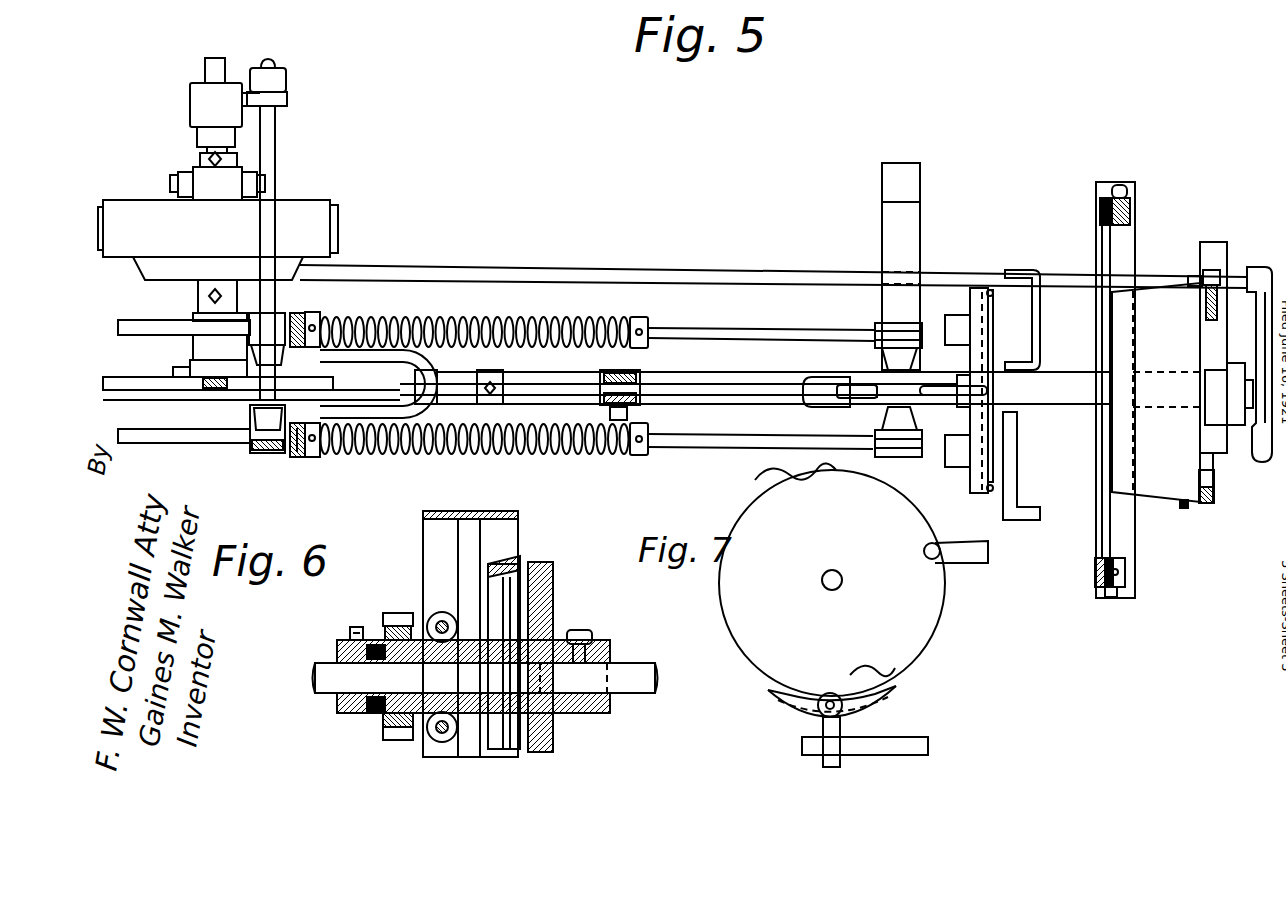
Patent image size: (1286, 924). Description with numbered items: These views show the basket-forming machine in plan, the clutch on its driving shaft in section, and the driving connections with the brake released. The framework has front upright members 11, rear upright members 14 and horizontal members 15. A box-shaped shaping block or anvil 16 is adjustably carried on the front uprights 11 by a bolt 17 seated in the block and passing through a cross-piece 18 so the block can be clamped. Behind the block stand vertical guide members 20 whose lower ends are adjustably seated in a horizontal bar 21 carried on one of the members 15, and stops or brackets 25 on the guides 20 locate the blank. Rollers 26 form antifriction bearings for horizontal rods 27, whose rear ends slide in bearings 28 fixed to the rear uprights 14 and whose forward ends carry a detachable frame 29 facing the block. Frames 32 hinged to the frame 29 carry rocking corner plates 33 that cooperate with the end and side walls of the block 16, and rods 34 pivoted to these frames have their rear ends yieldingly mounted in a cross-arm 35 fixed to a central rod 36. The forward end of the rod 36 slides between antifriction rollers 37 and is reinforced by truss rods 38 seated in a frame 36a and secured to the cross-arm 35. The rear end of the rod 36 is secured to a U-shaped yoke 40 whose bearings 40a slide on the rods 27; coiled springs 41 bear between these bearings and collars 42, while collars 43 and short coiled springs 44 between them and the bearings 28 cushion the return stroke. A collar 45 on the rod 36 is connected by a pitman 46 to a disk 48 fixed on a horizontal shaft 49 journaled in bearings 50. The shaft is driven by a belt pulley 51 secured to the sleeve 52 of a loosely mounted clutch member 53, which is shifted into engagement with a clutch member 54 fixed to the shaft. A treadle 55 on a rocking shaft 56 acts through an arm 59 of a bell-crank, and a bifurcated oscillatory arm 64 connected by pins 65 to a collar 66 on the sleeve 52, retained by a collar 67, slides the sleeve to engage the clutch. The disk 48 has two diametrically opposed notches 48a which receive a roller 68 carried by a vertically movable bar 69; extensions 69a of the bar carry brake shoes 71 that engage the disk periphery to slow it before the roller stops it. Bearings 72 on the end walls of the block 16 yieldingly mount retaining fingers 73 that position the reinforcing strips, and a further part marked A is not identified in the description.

In FIG. 5, the front upright members 11 is at (1216, 358).
In FIG. 5, the rear upright members 14 is at (288, 93).
In FIG. 5, the horizontally disposed members 15 is at (1075, 398).
In FIG. 7, the horizontally disposed members 15 is at (920, 737).
In FIG. 5, the shaping block or anvil 16 is at (1156, 392).
In FIG. 5, the bolt 17 is at (1213, 378).
In FIG. 5, the cross-piece 18 is at (1215, 408).
In FIG. 5, the guide members 20 is at (1100, 205).
In FIG. 5, the horizontal bar 21 is at (1135, 548).
In FIG. 5, the stops or brackets 25 is at (1130, 212).
In FIG. 5, the rollers 26 is at (880, 325).
In FIG. 5, the rods 27 is at (125, 322).
In FIG. 5, the bearings 28 is at (280, 315).
In FIG. 5, the detachable frame 29 is at (968, 358).
In FIG. 5, the frames 32 is at (990, 345).
In FIG. 5, the rocking corner plates 33 is at (1010, 270).
In FIG. 5, the rods 34 is at (945, 397).
In FIG. 5, the cross-arm 35 is at (640, 372).
In FIG. 5, the rod 36 is at (725, 394).
In FIG. 5, the frame 36a is at (877, 400).
In FIG. 5, the antifriction rollers 37 is at (812, 380).
In FIG. 5, the truss rods 38 is at (855, 385).
In FIG. 5, the U-shaped member or yoke 40 is at (425, 422).
In FIG. 5, the bearings 40a is at (320, 315).
In FIG. 5, the coiled springs 41 is at (494, 318).
In FIG. 5, the collars 42 is at (638, 317).
In FIG. 5, the collar 43 is at (300, 313).
In FIG. 5, the short coiled springs 44 is at (294, 457).
In FIG. 5, the collar 45 is at (488, 400).
In FIG. 5, the link or pitman 46 is at (145, 400).
In FIG. 7, the link or pitman 46 is at (972, 563).
In FIG. 5, the disk 48 is at (137, 380).
In FIG. 7, the disk 48 is at (719, 602).
In FIG. 5, the notches or depressions 48a is at (213, 390).
In FIG. 7, the notches or depressions 48a is at (790, 477).
In FIG. 5, the horizontal shaft 49 is at (205, 74).
In FIG. 6, the horizontal shaft 49 is at (330, 675).
In FIG. 7, the horizontal shaft 49 is at (838, 575).
In FIG. 5, the bearings 50 is at (190, 105).
In FIG. 5, the belt pulley 51 is at (218, 228).
In FIG. 6, the belt pulley 51 is at (425, 515).
In FIG. 6, the sleeve 52 is at (337, 652).
In FIG. 6, the clutch member 53 is at (520, 562).
In FIG. 5, the clutch member 54 is at (180, 272).
In FIG. 6, the clutch member 54 is at (556, 590).
In FIG. 5, the treadle 55 is at (1258, 462).
In FIG. 5, the rocking shaft 56 is at (748, 270).
In FIG. 7, the arm 59 is at (800, 724).
In FIG. 5, the oscillatory arm 64 is at (178, 180).
In FIG. 6, the oscillatory arm 64 is at (385, 628).
In FIG. 5, the screws or pins 65 is at (173, 192).
In FIG. 6, the screws or pins 65 is at (395, 613).
In FIG. 5, the collar 66 is at (217, 183).
In FIG. 6, the collar 66 is at (370, 712).
In FIG. 5, the collar 67 is at (200, 160).
In FIG. 6, the collar 67 is at (350, 633).
In FIG. 7, the roller 68 is at (828, 693).
In FIG. 7, the bar 69 is at (823, 757).
In FIG. 7, the extensions 69a is at (775, 706).
In FIG. 7, the brake shoes 71 is at (758, 680).
In FIG. 5, the bearings 72 is at (1217, 272).
In FIG. 5, the retaining fingers 73 is at (1193, 276).
In FIG. 5, the rod A is at (1102, 240).